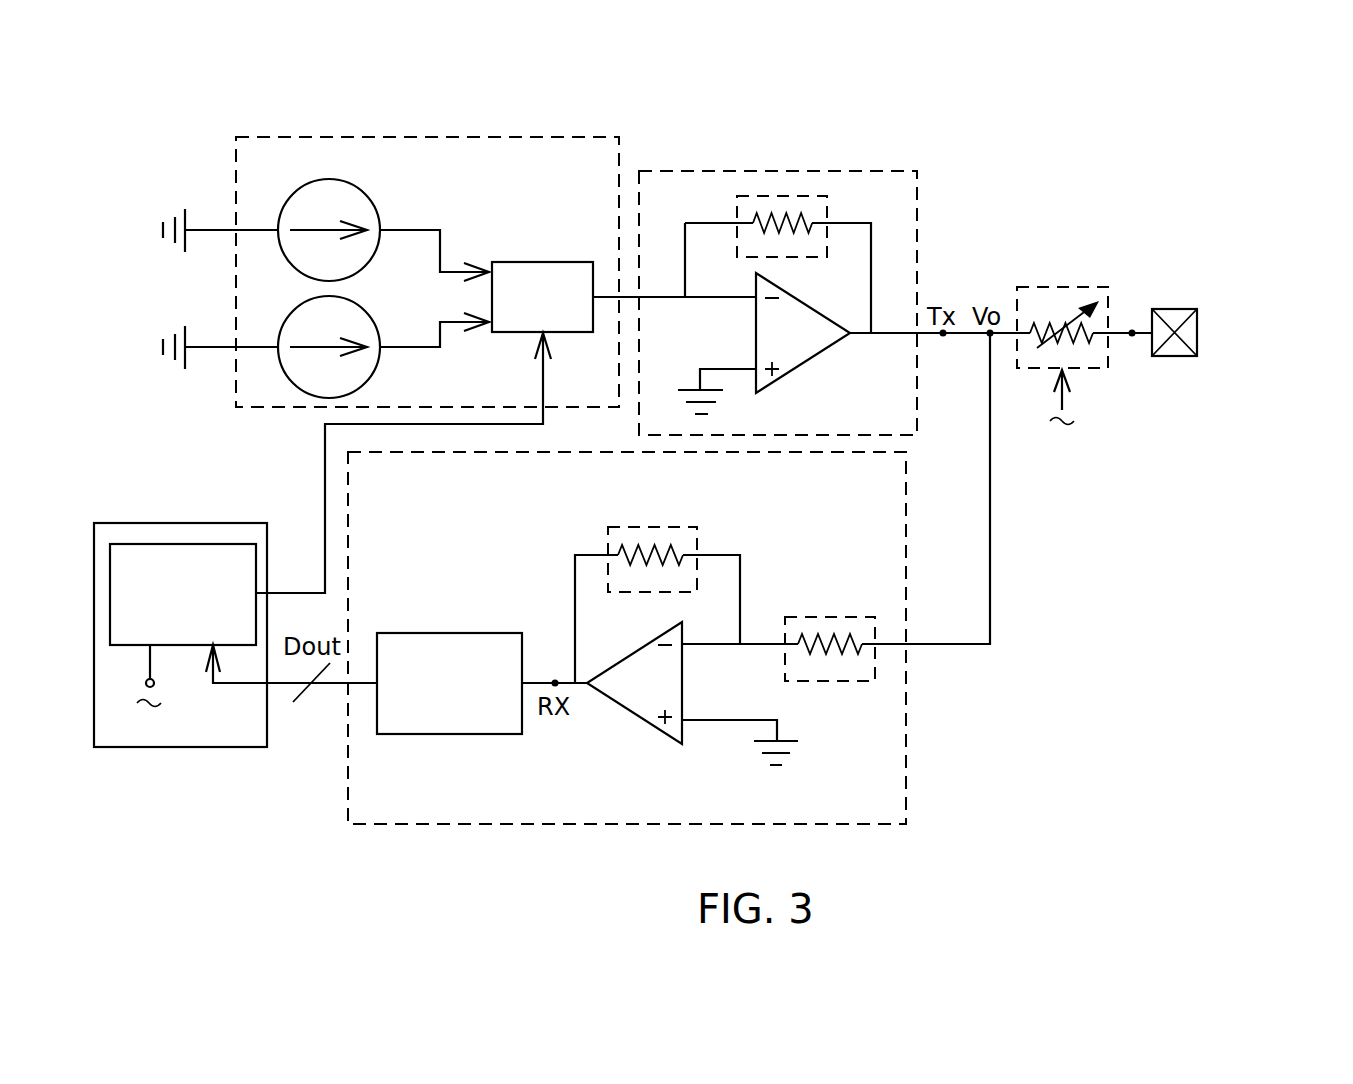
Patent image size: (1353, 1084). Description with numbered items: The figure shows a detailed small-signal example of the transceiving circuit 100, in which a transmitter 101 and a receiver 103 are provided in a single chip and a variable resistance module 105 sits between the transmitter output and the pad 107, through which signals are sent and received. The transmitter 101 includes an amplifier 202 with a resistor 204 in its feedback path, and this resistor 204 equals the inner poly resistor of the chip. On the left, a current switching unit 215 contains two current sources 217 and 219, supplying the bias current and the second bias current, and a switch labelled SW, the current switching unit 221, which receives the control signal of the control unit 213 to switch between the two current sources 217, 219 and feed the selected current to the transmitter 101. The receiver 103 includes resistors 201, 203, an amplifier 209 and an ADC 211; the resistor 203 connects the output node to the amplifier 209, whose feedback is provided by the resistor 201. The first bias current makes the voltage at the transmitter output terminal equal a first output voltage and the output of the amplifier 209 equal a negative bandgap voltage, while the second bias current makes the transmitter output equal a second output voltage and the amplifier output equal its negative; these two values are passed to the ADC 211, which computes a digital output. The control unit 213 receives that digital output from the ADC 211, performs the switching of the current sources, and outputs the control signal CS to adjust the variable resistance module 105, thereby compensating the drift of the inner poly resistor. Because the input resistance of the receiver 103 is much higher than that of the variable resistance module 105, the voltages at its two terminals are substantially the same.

The transceiving circuit 100 is at (1197, 199).
The transmitter 101 is at (708, 171).
The receiver 103 is at (906, 738).
The variable resistance module 105 is at (1068, 287).
The pad 107 is at (1172, 357).
The resistor 201 is at (617, 527).
The amplifier 202 is at (803, 363).
The resistor 203 is at (838, 684).
The resistor 204 is at (778, 196).
The amplifier 209 is at (635, 714).
The ADC 211 is at (445, 633).
The control unit 213 is at (177, 544).
The current switching unit 215 is at (437, 137).
The current source 217 is at (330, 177).
The current source 219 is at (314, 298).
The current switching unit 221 is at (540, 262).